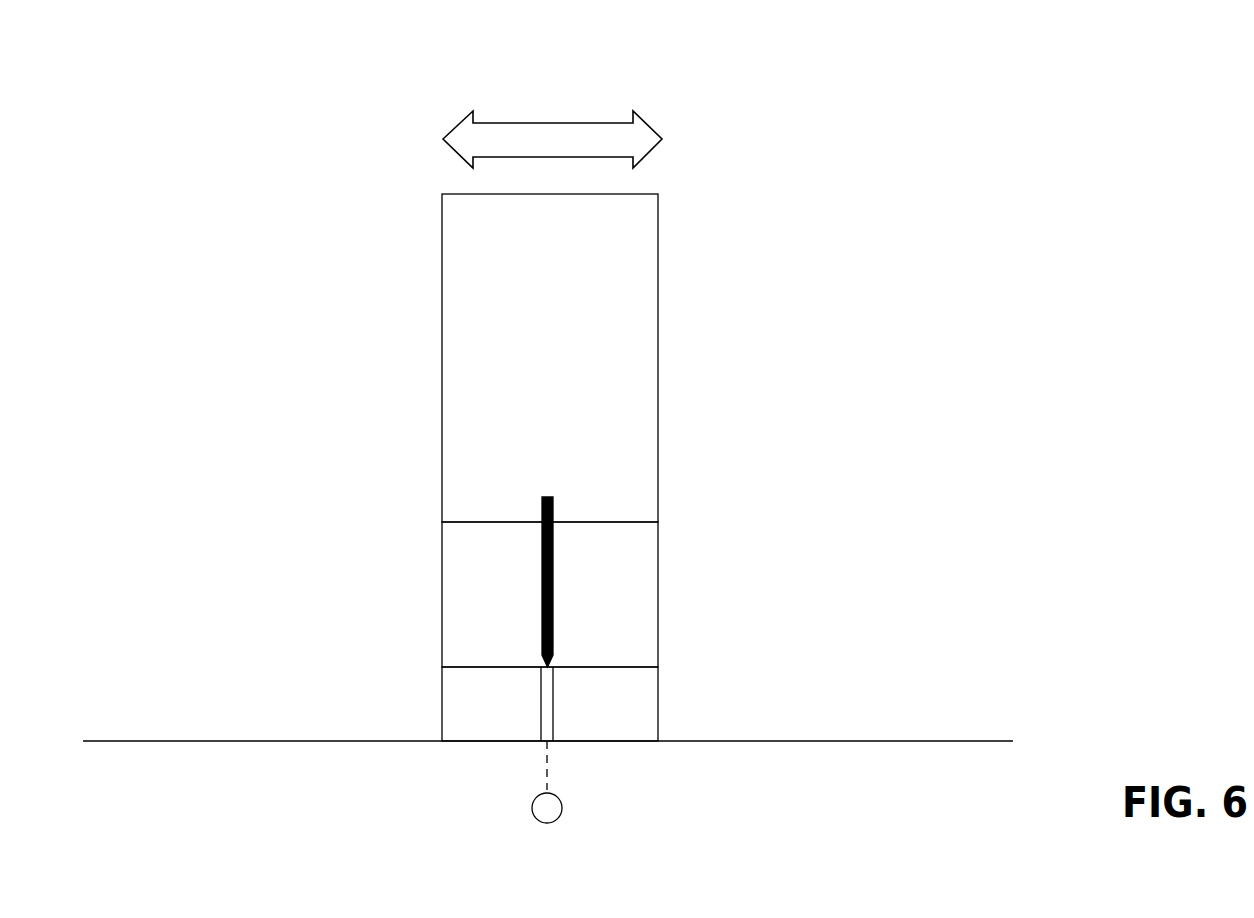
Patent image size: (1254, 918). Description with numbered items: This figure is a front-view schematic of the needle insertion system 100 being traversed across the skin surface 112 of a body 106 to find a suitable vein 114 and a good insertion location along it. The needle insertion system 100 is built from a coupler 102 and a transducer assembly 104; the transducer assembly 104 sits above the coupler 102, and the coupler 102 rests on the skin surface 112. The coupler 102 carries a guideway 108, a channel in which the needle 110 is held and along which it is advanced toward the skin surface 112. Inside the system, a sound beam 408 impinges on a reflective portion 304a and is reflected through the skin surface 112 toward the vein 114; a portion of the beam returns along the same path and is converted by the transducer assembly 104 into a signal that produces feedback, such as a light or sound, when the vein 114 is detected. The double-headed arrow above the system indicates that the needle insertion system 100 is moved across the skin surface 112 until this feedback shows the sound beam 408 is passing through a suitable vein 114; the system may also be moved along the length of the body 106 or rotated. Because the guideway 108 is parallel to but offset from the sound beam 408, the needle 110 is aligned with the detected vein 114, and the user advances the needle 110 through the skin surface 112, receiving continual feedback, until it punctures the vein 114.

The needle insertion system 100 is at (880, 66).
The coupler 102 is at (657, 594).
The transducer assembly 104 is at (657, 333).
The body 106 is at (1003, 688).
The guideway 108 is at (553, 728).
The needle 110 is at (541, 626).
The skin surface 112 is at (835, 741).
The vein 114 is at (538, 820).
The reflective portion 304a is at (657, 704).
The sound beam 408 is at (548, 762).